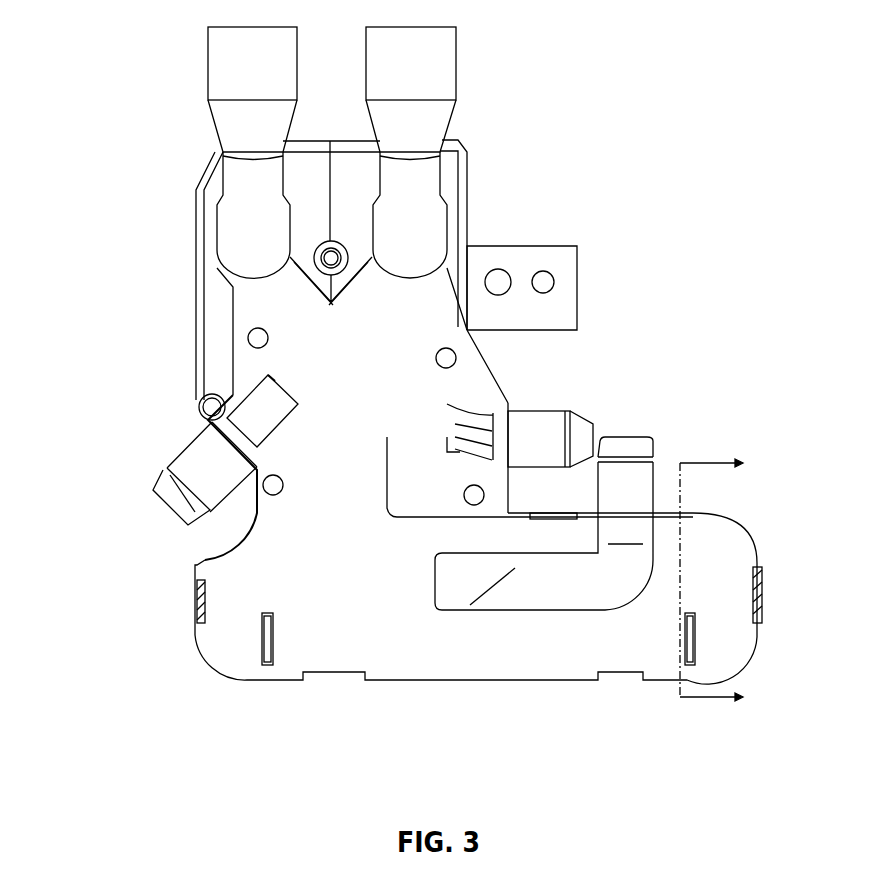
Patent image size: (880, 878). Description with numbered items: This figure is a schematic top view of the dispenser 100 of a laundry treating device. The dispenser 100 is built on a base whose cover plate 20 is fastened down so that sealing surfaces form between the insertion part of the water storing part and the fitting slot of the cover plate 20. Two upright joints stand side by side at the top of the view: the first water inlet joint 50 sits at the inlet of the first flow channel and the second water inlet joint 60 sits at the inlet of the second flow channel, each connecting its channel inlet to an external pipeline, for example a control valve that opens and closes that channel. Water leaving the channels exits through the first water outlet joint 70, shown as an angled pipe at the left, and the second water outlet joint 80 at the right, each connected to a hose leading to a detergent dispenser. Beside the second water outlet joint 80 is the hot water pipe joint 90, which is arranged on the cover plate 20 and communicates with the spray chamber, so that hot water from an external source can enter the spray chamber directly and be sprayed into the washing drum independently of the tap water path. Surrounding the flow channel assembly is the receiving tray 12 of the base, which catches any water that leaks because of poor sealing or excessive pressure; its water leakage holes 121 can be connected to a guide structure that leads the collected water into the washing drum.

The dispenser 100 is at (623, 207).
The receiving tray 12 is at (223, 288).
The cover plate 20 is at (300, 360).
The first water inlet joint 50 is at (425, 135).
The second water inlet joint 60 is at (240, 132).
The first water outlet joint 70 is at (200, 490).
The second water outlet joint 80 is at (543, 430).
The hot water pipe joint 90 is at (622, 502).
The water leakage holes 121 is at (212, 410).